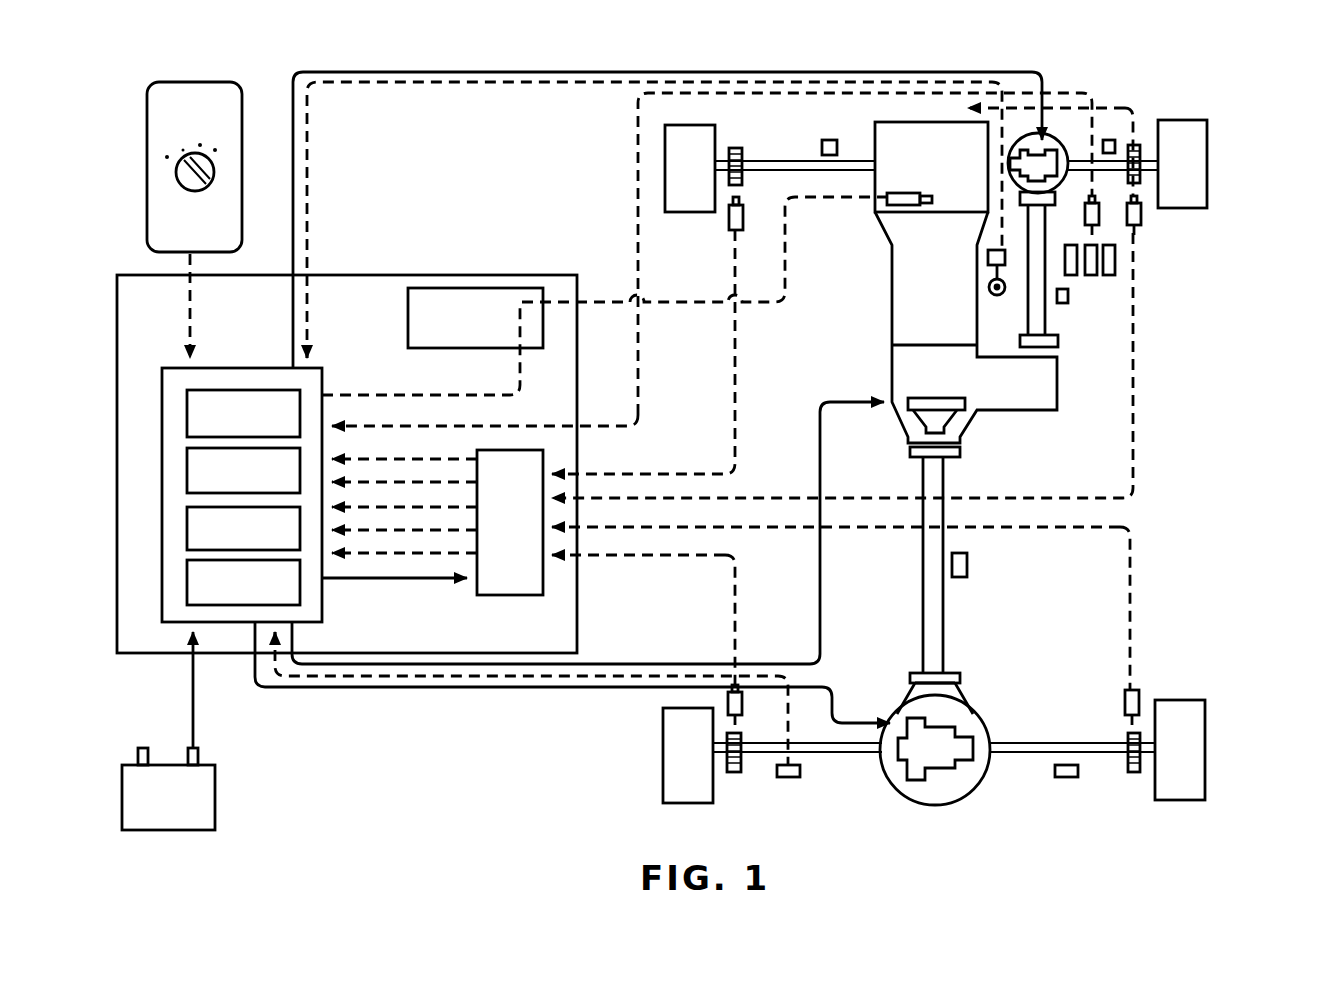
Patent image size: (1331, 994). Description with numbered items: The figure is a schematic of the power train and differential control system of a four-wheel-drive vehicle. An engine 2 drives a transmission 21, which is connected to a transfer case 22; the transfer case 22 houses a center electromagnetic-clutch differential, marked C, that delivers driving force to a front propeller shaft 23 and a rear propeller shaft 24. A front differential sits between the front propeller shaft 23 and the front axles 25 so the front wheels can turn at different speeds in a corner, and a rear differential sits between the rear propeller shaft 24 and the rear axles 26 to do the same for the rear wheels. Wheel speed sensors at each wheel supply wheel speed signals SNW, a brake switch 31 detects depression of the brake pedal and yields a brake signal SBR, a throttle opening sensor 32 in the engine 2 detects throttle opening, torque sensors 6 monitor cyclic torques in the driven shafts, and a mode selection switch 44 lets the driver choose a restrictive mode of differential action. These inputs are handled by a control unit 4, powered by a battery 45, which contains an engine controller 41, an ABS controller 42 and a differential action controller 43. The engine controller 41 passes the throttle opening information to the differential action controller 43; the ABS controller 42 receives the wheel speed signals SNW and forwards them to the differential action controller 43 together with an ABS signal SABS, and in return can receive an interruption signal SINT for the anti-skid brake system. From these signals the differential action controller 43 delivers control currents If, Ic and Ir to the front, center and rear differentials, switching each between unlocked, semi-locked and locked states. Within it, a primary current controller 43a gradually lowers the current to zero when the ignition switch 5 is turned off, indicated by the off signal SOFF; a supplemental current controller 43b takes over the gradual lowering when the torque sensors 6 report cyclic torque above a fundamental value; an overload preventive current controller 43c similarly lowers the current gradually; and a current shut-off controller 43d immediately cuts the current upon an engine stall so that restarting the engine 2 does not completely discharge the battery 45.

The engine 2 is at (931, 167).
The control unit 4 is at (358, 275).
The ignition switch 5 is at (997, 295).
The torque sensors 6 is at (829, 140).
The transmission 21 is at (892, 281).
The transfer case 22 is at (1026, 412).
The front propeller shaft 23 is at (1045, 320).
The rear propeller shaft 24 is at (922, 642).
The front axles 25 is at (778, 176).
The rear axles 26 is at (1013, 745).
The brake switch 31 is at (1100, 216).
The throttle opening sensor 32 is at (890, 205).
The engine controller 41 is at (432, 341).
The ABS controller 42 is at (437, 522).
The differential action controller 43 is at (162, 447).
The primary current controller 43a is at (243, 413).
The supplemental current controller 43b is at (243, 470).
The overload preventive current controller 43c is at (243, 528).
The current shut-off controller 43d is at (243, 582).
The mode selection switch 44 is at (208, 82).
The battery 45 is at (168, 731).
The center clutch / transfer C is at (863, 328).
The front clutch current If is at (565, 72).
The center clutch current Ic is at (598, 664).
The rear clutch current Ir is at (478, 688).
The off signal SOFF is at (440, 88).
The brake signal SBR is at (638, 105).
The ABS signal SABS is at (364, 458).
The interruption signal SINT is at (346, 582).
The wheel speed signals SNW is at (618, 555).